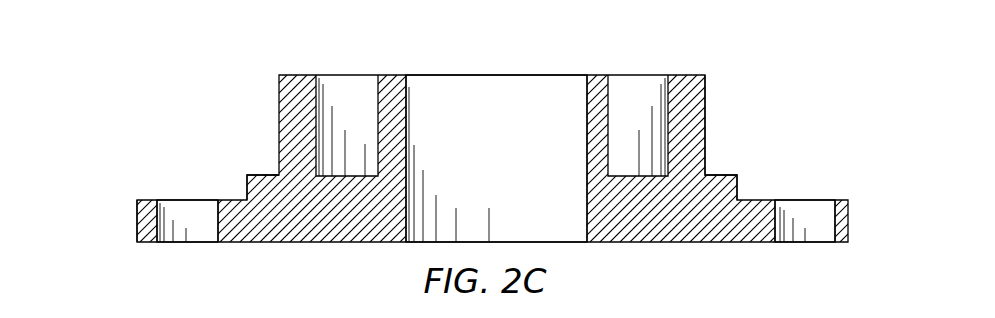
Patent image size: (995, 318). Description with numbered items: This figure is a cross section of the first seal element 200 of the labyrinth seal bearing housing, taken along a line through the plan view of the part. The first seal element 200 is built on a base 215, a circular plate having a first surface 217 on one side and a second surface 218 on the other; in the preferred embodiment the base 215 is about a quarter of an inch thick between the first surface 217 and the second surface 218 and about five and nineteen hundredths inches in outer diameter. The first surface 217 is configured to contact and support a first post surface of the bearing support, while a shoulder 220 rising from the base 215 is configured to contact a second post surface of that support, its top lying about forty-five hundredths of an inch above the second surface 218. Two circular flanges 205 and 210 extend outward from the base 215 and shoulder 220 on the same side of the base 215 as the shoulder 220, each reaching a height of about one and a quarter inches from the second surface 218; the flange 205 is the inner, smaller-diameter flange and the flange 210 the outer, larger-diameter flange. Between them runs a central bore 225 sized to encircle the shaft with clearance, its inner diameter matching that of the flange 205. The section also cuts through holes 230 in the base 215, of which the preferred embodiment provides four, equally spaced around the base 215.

The first seal element 200 is at (313, 30).
The flange 205 is at (599, 74).
The flange 210 is at (687, 74).
The base 215 is at (132, 223).
The first surface 217 is at (147, 199).
The second surface 218 is at (240, 243).
The shoulder 220 is at (262, 174).
The central bore 225 is at (586, 157).
The holes 230 is at (181, 199).